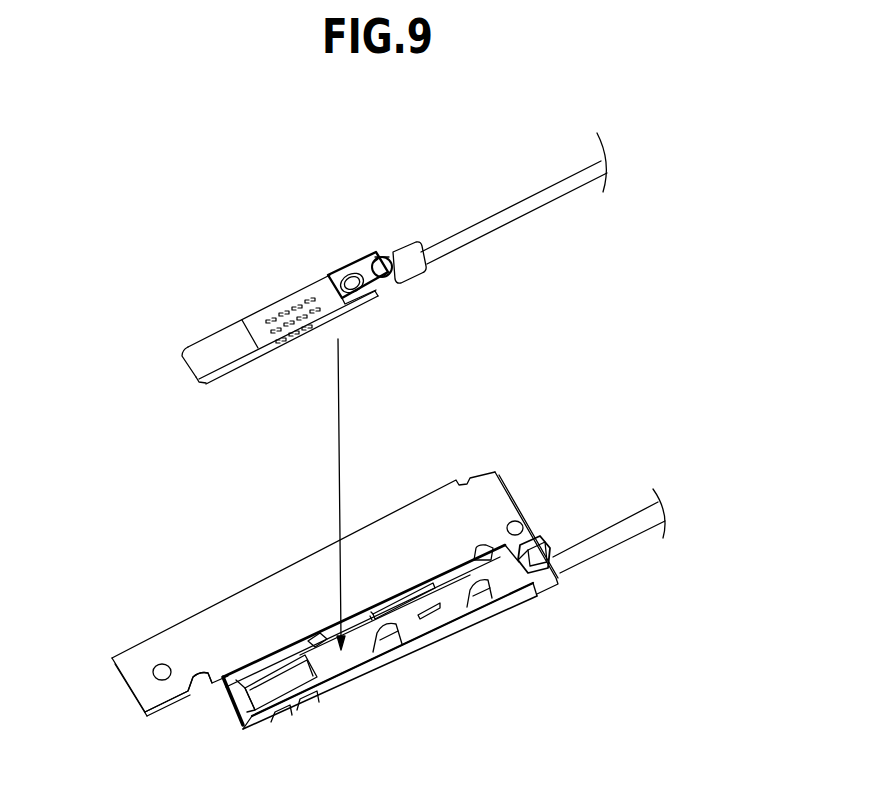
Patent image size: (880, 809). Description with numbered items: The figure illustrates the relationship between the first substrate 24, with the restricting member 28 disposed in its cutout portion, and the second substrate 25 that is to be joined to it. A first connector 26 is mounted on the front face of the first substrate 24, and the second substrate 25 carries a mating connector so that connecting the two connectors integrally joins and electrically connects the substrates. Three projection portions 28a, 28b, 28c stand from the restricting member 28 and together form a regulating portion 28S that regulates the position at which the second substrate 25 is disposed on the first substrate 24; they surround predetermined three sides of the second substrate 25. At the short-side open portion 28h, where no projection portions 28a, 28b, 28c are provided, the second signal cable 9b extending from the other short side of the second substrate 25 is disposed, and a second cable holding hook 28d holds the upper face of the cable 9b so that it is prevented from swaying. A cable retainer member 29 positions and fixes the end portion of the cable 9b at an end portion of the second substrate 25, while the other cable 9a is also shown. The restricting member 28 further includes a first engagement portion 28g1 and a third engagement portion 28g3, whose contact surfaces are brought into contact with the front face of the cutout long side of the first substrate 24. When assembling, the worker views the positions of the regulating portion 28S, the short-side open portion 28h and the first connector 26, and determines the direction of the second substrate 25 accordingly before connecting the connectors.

The first cable 9a is at (627, 528).
The second signal cable 9b is at (500, 215).
The first substrate 24 is at (248, 672).
The second substrate 25 is at (252, 340).
The first connector 26 is at (277, 677).
The restricting member 28 is at (330, 645).
The projection portion 28a is at (385, 586).
The projection portion 28b is at (466, 633).
The projection portion 28c is at (218, 718).
The second cable holding hook 28d is at (526, 540).
The first engagement portion 28g1 is at (502, 572).
The third engagement portion 28g3 is at (308, 633).
The short-side open portion 28h is at (240, 610).
The regulating portion 28S is at (408, 600).
The cable retainer member 29 is at (365, 262).